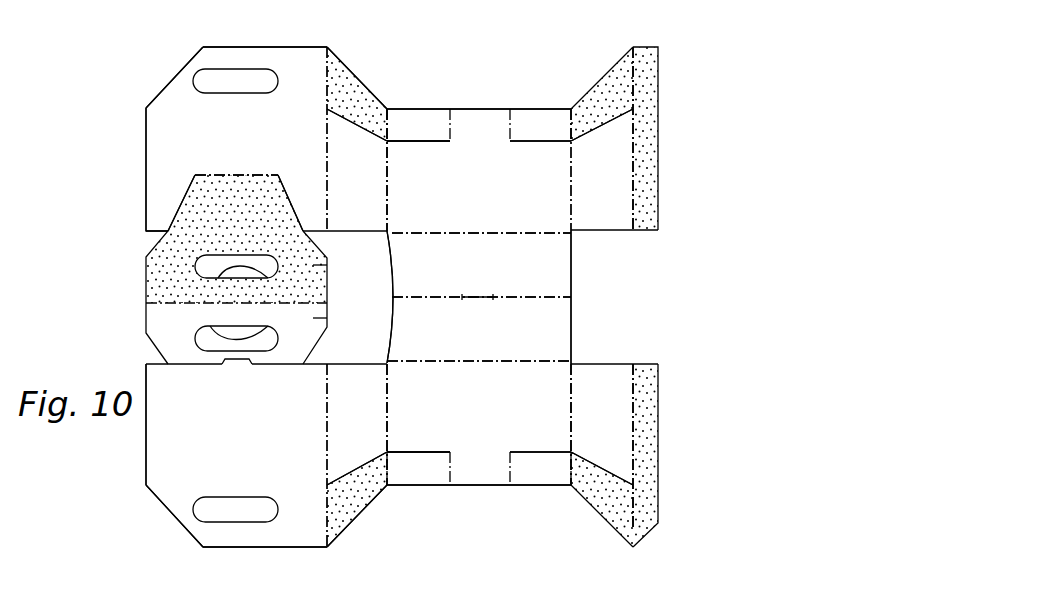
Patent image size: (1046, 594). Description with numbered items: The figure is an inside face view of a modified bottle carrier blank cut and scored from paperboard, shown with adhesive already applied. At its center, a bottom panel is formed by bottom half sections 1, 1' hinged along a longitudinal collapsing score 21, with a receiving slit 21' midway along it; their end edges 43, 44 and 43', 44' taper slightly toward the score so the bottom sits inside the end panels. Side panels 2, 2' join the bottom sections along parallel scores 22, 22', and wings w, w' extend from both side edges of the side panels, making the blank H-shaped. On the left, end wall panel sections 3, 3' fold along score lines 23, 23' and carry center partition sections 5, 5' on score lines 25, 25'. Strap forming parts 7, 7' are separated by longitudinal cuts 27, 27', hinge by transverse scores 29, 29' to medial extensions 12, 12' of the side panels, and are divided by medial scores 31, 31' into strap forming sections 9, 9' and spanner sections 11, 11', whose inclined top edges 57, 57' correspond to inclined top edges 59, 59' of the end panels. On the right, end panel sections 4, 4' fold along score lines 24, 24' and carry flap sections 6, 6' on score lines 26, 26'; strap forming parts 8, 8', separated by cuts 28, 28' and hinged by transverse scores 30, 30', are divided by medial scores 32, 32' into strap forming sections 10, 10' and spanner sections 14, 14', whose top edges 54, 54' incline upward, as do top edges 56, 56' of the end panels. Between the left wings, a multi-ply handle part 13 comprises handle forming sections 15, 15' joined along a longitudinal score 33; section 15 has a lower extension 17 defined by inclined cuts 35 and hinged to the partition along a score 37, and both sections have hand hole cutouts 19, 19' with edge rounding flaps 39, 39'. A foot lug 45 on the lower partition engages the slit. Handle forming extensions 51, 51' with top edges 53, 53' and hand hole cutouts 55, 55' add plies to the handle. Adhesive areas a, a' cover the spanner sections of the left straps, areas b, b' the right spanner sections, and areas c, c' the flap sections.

The bottom half section 1 is at (481, 265).
The bottom half section 1' is at (479, 342).
The side panel 2 is at (479, 170).
The side panel 2' is at (479, 424).
The end wall panel section 3 is at (357, 139).
The end wall panel section 3' is at (357, 455).
The end panel section 4 is at (614, 138).
The end panel section 4' is at (614, 447).
The center partition section 5 is at (266, 139).
The center partition section 5' is at (266, 455).
The flap section 6 is at (665, 138).
The flap section 6' is at (669, 455).
The strap forming part 7 is at (418, 103).
The strap forming part 7' is at (418, 493).
The strap forming part 8 is at (540, 91).
The strap forming part 8' is at (540, 507).
The strap forming section 9 is at (276, 195).
The strap forming section 9' is at (418, 487).
The strap forming section 10 is at (540, 116).
The strap forming section 10' is at (540, 488).
The spanner section 11 is at (365, 78).
The spanner section 11' is at (367, 520).
The medial extension 12 is at (480, 102).
The medial extension 12' is at (480, 507).
The multi-ply handle part 13 is at (144, 290).
The spanner section 14 is at (599, 94).
The spanner section 14' is at (602, 499).
The handle forming section 15 is at (335, 267).
The handle forming section 15' is at (338, 317).
The lower extension 17 is at (228, 198).
The hand hole cutout 19 is at (288, 279).
The hand hole cutout 19' is at (286, 333).
The collapsing score 21 is at (481, 290).
The receiving slit 21' is at (495, 290).
The score 22 is at (481, 230).
The score 22' is at (479, 374).
The score line 23 is at (405, 170).
The score line 23' is at (406, 424).
The score line 24 is at (589, 183).
The score line 24' is at (589, 414).
The score line 25 is at (342, 139).
The score line 25' is at (312, 455).
The score line 26 is at (644, 152).
The score line 26' is at (643, 435).
The longitudinally extending cut 27 is at (420, 155).
The longitudinally extending cut 27' is at (422, 442).
The longitudinally extending cut 28 is at (540, 156).
The longitudinally extending cut 28' is at (539, 440).
The transverse score 29 is at (462, 102).
The transverse score 29' is at (450, 493).
The transverse score 30 is at (512, 102).
The transverse score 30' is at (507, 493).
The medial score 31 is at (404, 138).
The medial score 31' is at (406, 457).
The medial score 32 is at (572, 103).
The medial score 32' is at (555, 459).
The longitudinal score 33 is at (162, 304).
The vertically inclined cuts 35 is at (182, 204).
The longitudinal score 37 is at (253, 174).
The edge rounding flap 39 is at (236, 266).
The edge rounding flap 39' is at (236, 340).
The end edge 43 is at (377, 297).
The end edge 43' is at (373, 297).
The end edge 44 is at (589, 297).
The end edge 44' is at (593, 297).
The foot lug 45 is at (236, 365).
The handle forming extension 51 is at (160, 77).
The handle forming extension 51' is at (160, 516).
The top edge 53 is at (265, 57).
The top edge 53' is at (265, 559).
The top edge 54 is at (600, 72).
The top edge 54' is at (602, 523).
The hand hole cutout 55 is at (250, 82).
The hand hole cutout 55' is at (228, 538).
The top edge 56 is at (602, 131).
The top edge 56' is at (602, 462).
The inclined top edge 57 is at (357, 92).
The inclined top edge 57' is at (367, 512).
The inclined top edge 59 is at (357, 129).
The inclined top edge 59' is at (357, 464).
The area of adhesive a is at (359, 105).
The area of adhesive a' is at (345, 487).
The area of adhesive b is at (602, 125).
The area of adhesive b' is at (602, 469).
The area of adhesive c is at (664, 138).
The area of adhesive c' is at (666, 447).
The wing w is at (400, 156).
The wing w' is at (408, 424).